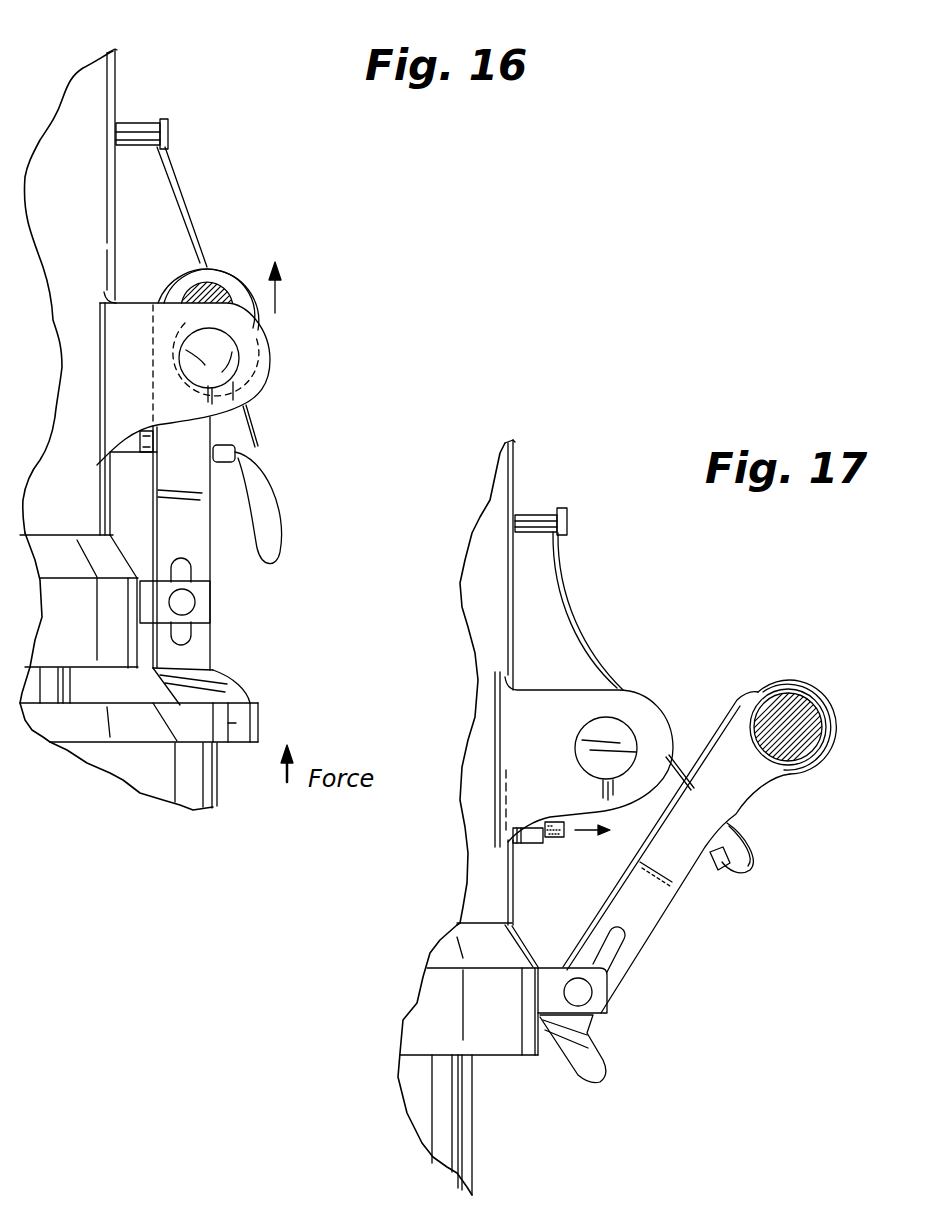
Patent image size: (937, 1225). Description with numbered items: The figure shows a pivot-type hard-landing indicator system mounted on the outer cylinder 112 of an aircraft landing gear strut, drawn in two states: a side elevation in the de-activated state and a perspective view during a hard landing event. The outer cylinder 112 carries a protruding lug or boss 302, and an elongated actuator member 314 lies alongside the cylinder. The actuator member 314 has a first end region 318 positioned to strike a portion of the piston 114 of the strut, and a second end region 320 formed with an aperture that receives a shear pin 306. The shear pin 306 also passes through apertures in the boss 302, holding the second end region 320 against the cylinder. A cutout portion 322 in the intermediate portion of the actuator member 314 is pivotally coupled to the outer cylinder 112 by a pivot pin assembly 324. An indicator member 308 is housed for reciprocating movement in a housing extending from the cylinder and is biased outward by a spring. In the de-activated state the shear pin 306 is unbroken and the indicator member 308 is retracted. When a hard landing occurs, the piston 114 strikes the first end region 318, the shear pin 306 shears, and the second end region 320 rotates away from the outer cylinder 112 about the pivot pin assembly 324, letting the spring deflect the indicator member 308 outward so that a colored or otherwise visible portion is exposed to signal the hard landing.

In FIG. 16, the outer cylinder 112 is at (115, 83).
In FIG. 17, the outer cylinder 112 is at (510, 480).
In FIG. 16, the piston 114 is at (258, 718).
In FIG. 16, the boss 302 is at (265, 368).
In FIG. 17, the boss 302 is at (657, 713).
In FIG. 16, the shear pin 306 is at (203, 357).
In FIG. 17, the shear pin 306 is at (617, 733).
In FIG. 16, the indicator member 308 is at (117, 462).
In FIG. 17, the indicator member 308 is at (555, 843).
In FIG. 16, the elongated actuator member 314 is at (210, 540).
In FIG. 17, the elongated actuator member 314 is at (691, 900).
In FIG. 16, the first end region 318 is at (220, 692).
In FIG. 17, the first end region 318 is at (580, 1063).
In FIG. 16, the second end region 320 is at (240, 265).
In FIG. 17, the second end region 320 is at (833, 710).
In FIG. 16, the cutout portion 322 is at (185, 200).
In FIG. 17, the cutout portion 322 is at (575, 600).
In FIG. 17, the pivot pin assembly 324 is at (552, 967).